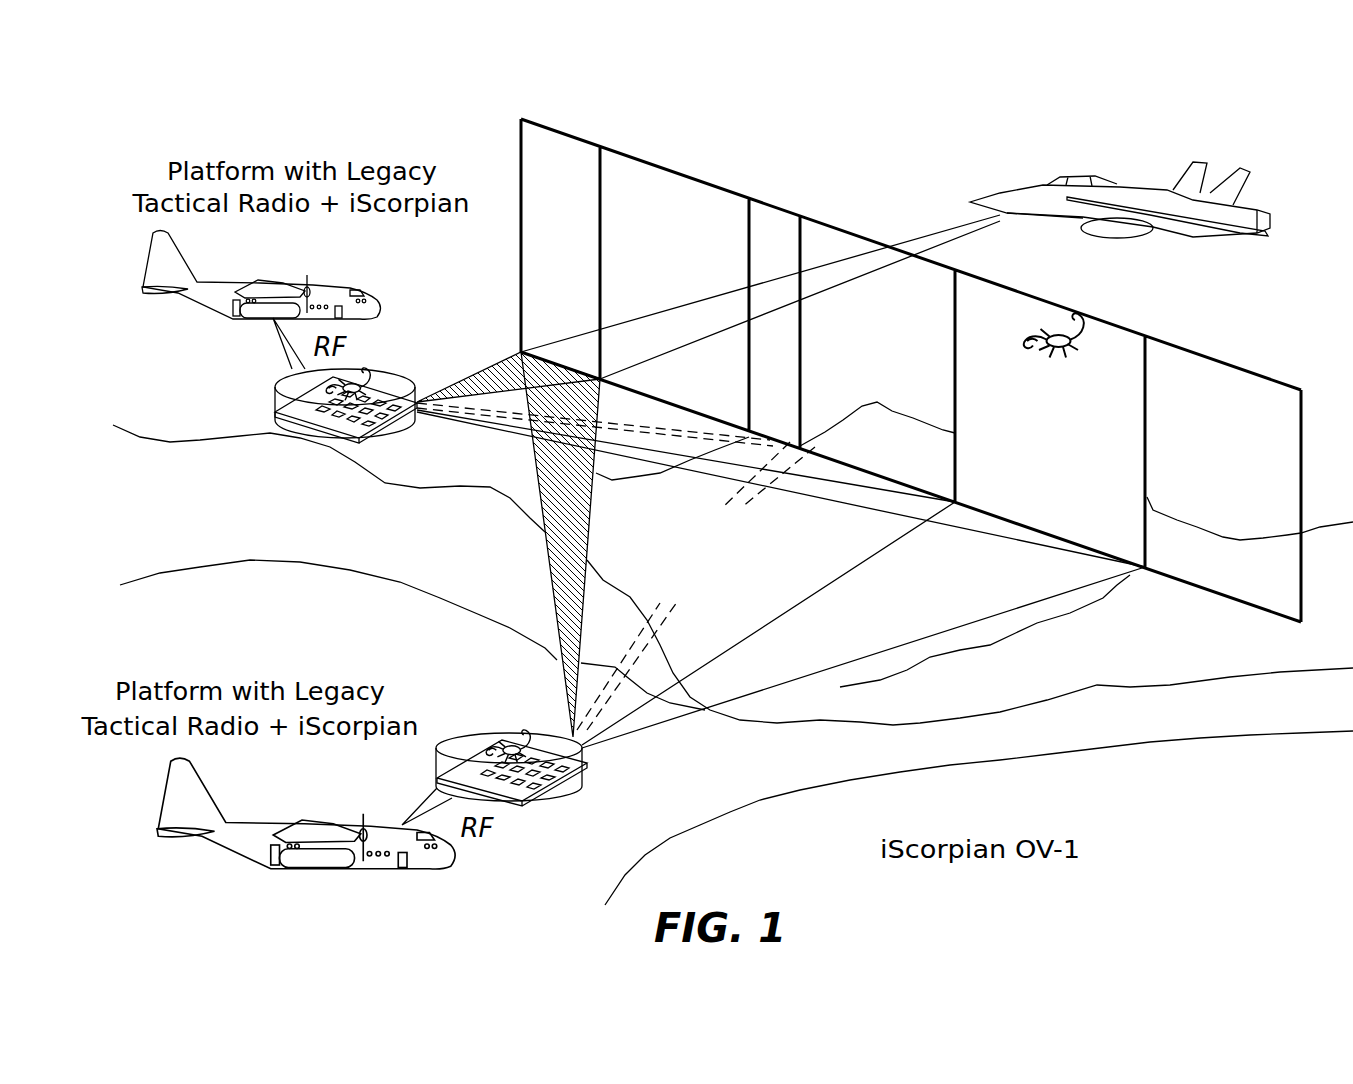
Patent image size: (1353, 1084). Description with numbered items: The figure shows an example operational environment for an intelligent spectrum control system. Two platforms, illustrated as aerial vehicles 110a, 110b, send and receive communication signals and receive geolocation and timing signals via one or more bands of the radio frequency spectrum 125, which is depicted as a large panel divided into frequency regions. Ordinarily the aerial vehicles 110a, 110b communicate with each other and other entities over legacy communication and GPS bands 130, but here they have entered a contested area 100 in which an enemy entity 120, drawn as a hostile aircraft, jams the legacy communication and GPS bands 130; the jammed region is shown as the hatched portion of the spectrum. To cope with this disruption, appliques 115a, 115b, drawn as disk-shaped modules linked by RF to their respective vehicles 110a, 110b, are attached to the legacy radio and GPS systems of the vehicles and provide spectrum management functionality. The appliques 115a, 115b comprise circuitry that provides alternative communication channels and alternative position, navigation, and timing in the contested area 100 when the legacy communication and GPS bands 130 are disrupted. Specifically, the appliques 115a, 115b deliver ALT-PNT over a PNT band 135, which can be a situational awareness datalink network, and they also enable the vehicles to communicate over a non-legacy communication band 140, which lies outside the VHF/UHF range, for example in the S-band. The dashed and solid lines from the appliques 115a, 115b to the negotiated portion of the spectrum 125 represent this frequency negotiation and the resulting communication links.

The area 100 is at (1102, 97).
The aerial vehicle 110a is at (210, 310).
The aerial vehicle 110b is at (247, 862).
The applique 115a is at (333, 438).
The applique 115b is at (583, 765).
The enemy entity 120 is at (1117, 237).
The radio frequency spectrum 125 is at (1122, 575).
The legacy communication and GPS bands 130 is at (548, 557).
The PNT band 135 is at (607, 687).
The non-legacy communication band 140 is at (968, 625).